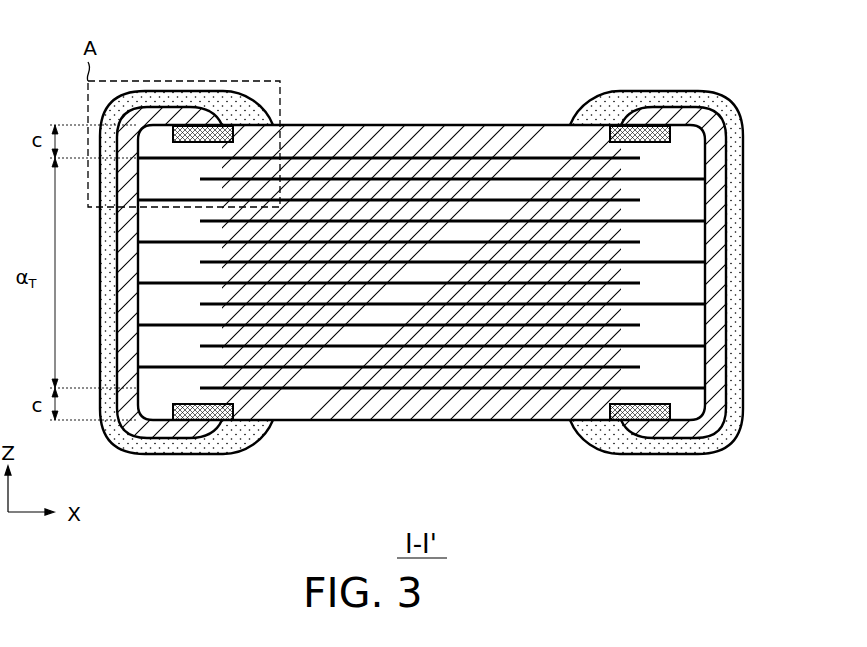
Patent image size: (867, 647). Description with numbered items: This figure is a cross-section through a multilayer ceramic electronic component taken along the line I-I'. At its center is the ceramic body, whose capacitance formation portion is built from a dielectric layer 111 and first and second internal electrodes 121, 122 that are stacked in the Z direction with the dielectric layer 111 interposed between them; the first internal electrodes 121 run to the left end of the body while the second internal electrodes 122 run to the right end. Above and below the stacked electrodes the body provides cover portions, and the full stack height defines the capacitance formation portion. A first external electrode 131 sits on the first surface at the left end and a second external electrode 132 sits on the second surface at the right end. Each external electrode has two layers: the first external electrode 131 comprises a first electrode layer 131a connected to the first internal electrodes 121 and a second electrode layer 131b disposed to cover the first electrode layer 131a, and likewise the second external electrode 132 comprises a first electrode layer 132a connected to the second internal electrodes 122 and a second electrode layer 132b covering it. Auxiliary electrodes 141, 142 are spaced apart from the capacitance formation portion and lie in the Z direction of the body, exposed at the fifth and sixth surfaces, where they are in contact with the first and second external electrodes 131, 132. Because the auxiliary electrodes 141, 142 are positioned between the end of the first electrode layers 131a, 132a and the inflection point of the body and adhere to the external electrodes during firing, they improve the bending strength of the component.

The dielectric layer 111 is at (438, 404).
The first internal electrode 121 is at (152, 367).
The second internal electrode 122 is at (390, 389).
The first external electrode 131 is at (290, 236).
The first electrode layer 131a is at (237, 37).
The second electrode layer 131b is at (222, 122).
The second external electrode 132 is at (563, 235).
The first electrode layer 132a is at (613, 34).
The second electrode layer 132b is at (612, 106).
The auxiliary electrode 141 is at (236, 135).
The auxiliary electrode 142 is at (236, 410).